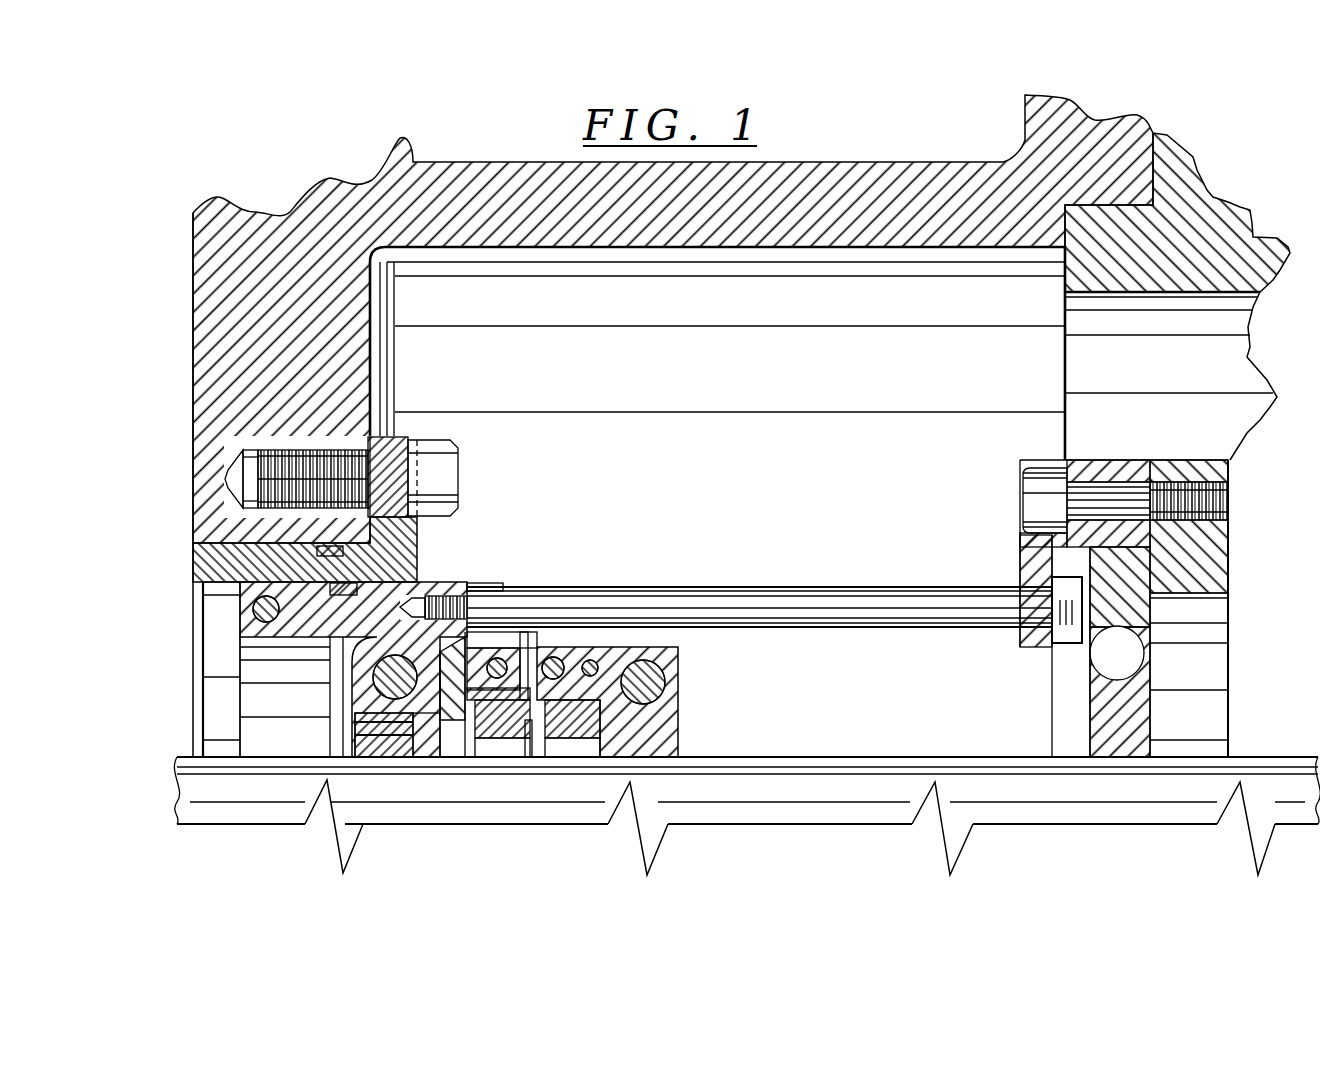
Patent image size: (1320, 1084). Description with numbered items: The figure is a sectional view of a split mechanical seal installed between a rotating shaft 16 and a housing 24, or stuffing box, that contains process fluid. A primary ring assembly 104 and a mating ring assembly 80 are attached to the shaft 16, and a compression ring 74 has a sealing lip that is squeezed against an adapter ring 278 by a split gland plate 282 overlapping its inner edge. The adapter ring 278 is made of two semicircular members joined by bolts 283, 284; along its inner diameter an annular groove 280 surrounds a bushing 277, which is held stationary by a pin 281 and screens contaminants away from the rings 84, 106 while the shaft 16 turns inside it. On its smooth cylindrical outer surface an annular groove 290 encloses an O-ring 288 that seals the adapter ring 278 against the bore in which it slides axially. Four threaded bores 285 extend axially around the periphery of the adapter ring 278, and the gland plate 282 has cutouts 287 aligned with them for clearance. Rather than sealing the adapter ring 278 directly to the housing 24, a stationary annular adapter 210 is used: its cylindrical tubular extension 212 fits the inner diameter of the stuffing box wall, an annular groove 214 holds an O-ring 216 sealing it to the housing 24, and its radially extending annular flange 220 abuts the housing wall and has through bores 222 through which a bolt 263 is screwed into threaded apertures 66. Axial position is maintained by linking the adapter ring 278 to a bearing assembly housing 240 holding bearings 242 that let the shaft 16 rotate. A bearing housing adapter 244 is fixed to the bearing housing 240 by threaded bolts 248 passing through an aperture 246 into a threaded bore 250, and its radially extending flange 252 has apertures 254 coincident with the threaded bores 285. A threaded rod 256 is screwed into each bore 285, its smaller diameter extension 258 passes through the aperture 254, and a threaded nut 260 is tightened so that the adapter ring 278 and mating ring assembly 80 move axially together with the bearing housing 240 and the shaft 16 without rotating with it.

The shaft 16 is at (1268, 793).
The housing 24 is at (320, 323).
The threaded apertures 66 is at (310, 473).
The compression ring 74 is at (466, 722).
The mating ring assembly 80 is at (495, 750).
The ring 84 is at (517, 713).
The primary ring assembly 104 is at (580, 767).
The ring 106 is at (567, 765).
The stationary annular adapter 210 is at (428, 433).
The cylindrical tubular extension 212 is at (193, 525).
The annular groove 214 is at (305, 549).
The O-ring 216 is at (340, 548).
The radially extending annular flange 220 is at (388, 437).
The through bores 222 is at (378, 418).
The bearing assembly housing 240 is at (1177, 460).
The bearings 242 is at (1095, 713).
The bearing housing adapter 244 is at (1100, 467).
The aperture 246 is at (1230, 483).
The threaded bolts 248 is at (1037, 467).
The threaded bore 250 is at (1233, 497).
The radially extending flange 252 is at (1042, 490).
The apertures 254 is at (1012, 617).
The threaded rod 256 is at (873, 603).
The smaller diameter extension 258 is at (1030, 607).
The threaded nut 260 is at (1057, 640).
The bolt 263 is at (445, 468).
The bushing 277 is at (380, 727).
The adapter ring 278 is at (431, 587).
The annular groove 280 is at (363, 717).
The pin 281 is at (353, 727).
The gland plate 282 is at (505, 627).
The bolt 283 is at (215, 625).
The bolt 284 is at (377, 687).
The threaded bores 285 is at (435, 605).
The cutouts 287 is at (478, 630).
The O-ring 288 is at (357, 592).
The annular groove 290 is at (333, 587).